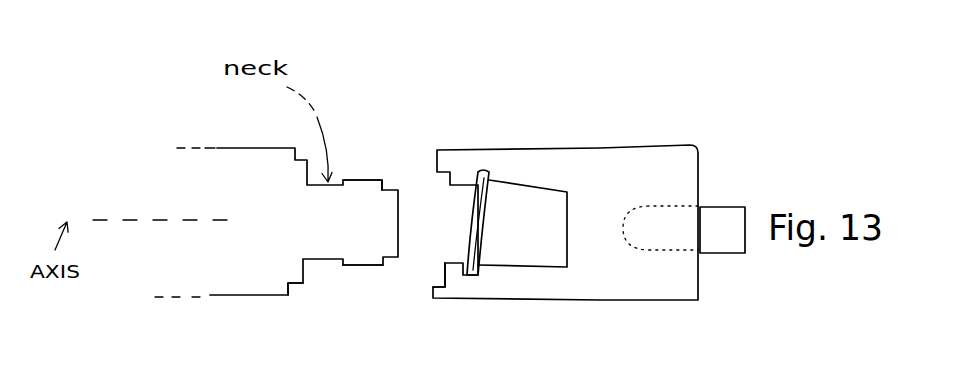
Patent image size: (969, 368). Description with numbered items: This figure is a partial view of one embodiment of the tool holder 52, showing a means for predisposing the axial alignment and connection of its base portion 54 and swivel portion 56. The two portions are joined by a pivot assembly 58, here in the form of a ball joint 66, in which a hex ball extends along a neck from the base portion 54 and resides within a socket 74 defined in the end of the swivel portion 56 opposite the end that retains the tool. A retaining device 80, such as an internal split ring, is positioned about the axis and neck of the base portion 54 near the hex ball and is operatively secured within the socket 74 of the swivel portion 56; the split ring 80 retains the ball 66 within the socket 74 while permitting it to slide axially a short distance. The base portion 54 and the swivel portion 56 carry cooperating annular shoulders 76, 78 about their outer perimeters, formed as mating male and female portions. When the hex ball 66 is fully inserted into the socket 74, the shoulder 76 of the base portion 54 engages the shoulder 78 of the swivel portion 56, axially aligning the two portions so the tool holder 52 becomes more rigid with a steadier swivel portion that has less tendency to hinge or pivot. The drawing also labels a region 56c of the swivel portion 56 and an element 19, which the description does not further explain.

The tool holder 52 is at (461, 93).
The base portion 54 is at (315, 231).
The swivel portion 56 is at (563, 163).
The housing port 56c is at (677, 205).
The pivot assembly 58 is at (383, 138).
The ball joint 66 is at (361, 282).
The socket 74 is at (540, 247).
The shoulder 76 is at (296, 303).
The shoulder 78 is at (417, 299).
The retaining device 80 is at (469, 214).
The conduit 19 is at (737, 245).